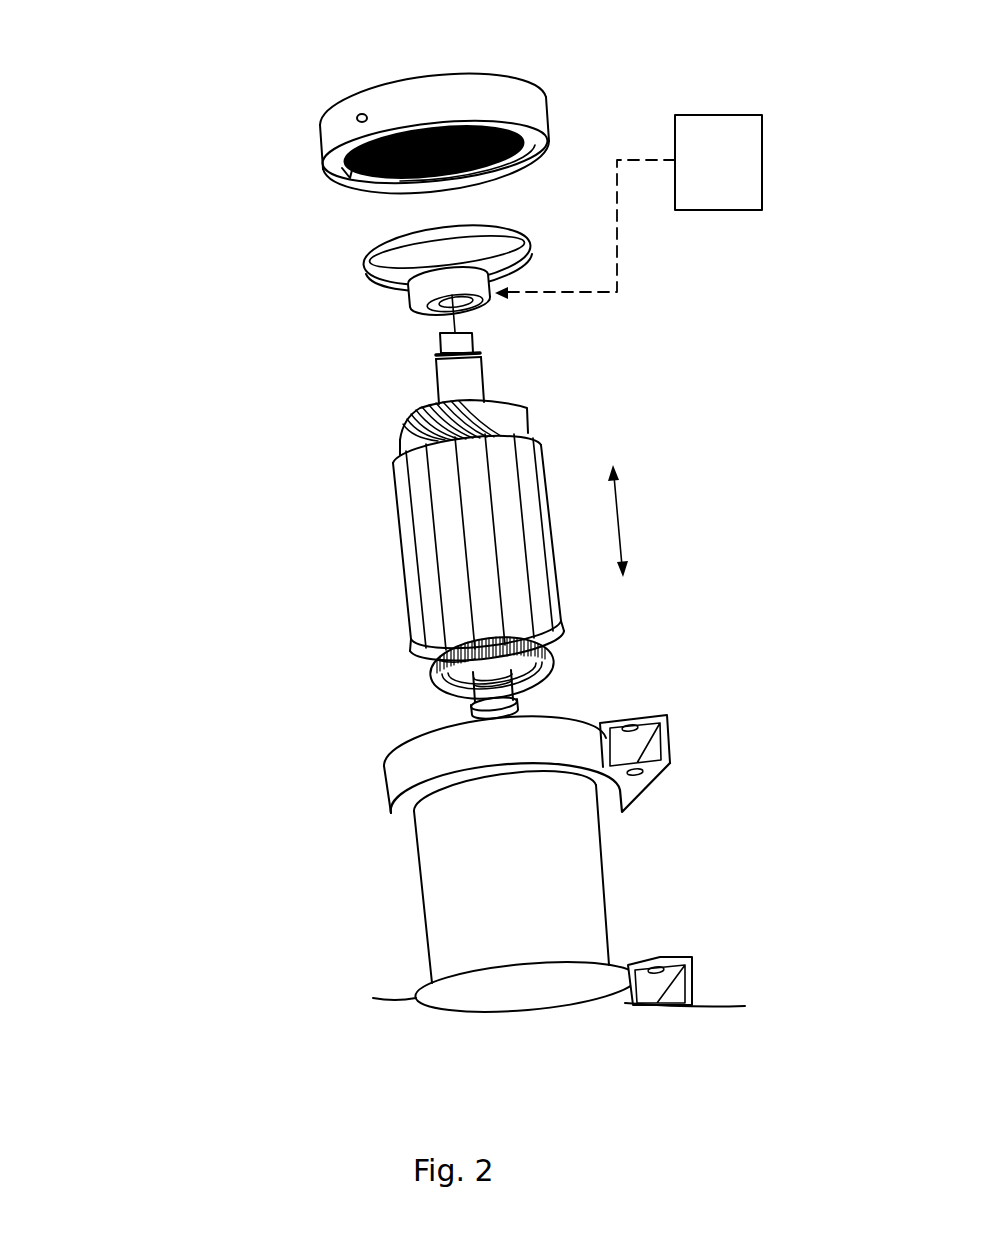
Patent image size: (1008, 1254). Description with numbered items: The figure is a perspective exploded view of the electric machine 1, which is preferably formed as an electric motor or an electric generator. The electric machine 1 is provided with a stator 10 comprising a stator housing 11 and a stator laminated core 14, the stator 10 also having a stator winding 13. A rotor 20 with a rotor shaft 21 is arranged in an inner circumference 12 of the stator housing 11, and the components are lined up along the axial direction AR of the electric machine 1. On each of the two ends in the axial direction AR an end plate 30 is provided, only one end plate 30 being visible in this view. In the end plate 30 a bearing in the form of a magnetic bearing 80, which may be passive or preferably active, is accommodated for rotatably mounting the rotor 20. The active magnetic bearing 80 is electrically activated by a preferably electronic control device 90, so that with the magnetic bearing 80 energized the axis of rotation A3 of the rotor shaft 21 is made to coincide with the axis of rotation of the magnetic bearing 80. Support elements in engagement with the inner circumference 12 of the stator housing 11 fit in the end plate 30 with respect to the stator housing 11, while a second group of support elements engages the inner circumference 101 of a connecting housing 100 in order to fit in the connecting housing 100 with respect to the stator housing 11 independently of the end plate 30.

The electric machine 1 is at (174, 373).
The stator 10 is at (403, 928).
The stator housing 11 is at (592, 883).
The inner circumference of the stator housing 12 is at (574, 704).
The stator winding 13 is at (528, 421).
The stator laminated core 14 is at (394, 596).
The rotor 20 is at (450, 381).
The rotor shaft 21 is at (458, 346).
The end plate 30 is at (352, 262).
The magnetic bearing 80 is at (398, 305).
The control device 90 is at (730, 149).
The connecting housing 100 is at (356, 117).
The inner circumference of the connecting housing 101 is at (347, 174).
The axis of rotation of the rotor shaft A3 is at (452, 320).
The axial direction AR is at (633, 521).